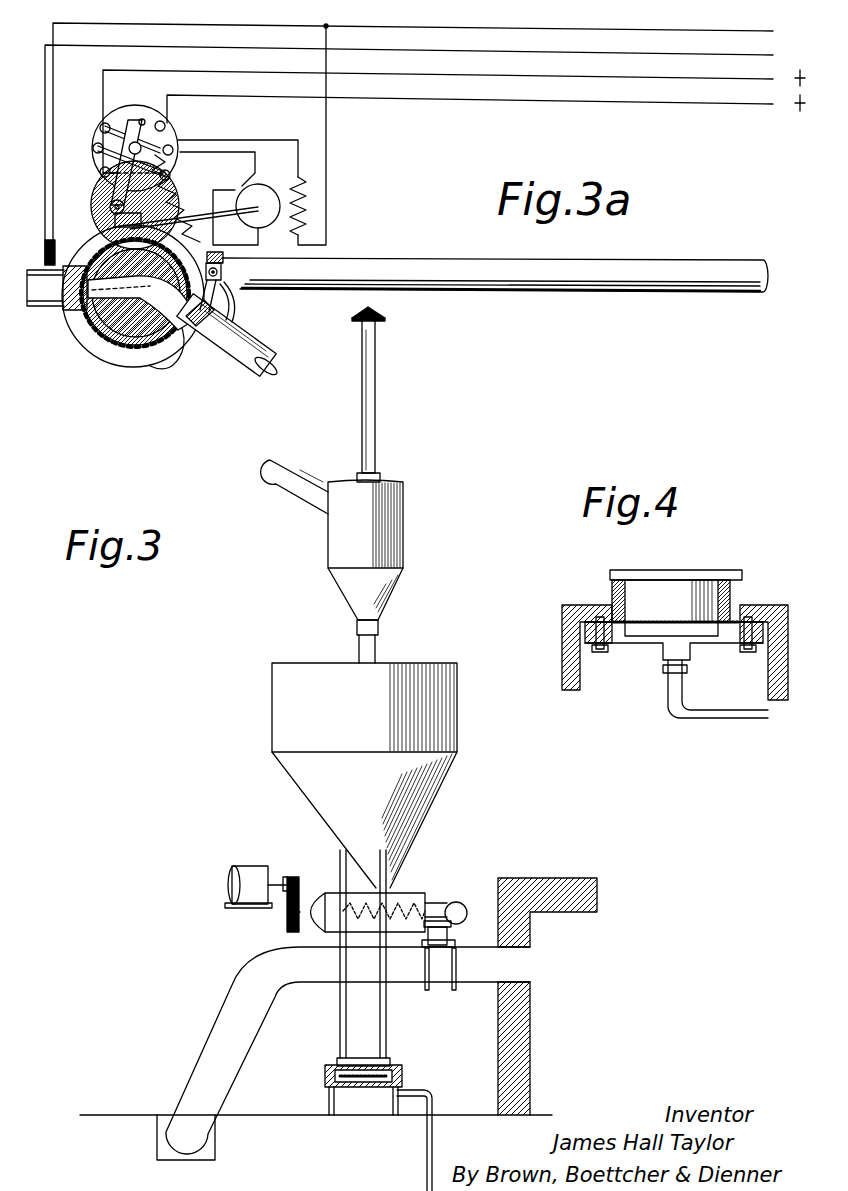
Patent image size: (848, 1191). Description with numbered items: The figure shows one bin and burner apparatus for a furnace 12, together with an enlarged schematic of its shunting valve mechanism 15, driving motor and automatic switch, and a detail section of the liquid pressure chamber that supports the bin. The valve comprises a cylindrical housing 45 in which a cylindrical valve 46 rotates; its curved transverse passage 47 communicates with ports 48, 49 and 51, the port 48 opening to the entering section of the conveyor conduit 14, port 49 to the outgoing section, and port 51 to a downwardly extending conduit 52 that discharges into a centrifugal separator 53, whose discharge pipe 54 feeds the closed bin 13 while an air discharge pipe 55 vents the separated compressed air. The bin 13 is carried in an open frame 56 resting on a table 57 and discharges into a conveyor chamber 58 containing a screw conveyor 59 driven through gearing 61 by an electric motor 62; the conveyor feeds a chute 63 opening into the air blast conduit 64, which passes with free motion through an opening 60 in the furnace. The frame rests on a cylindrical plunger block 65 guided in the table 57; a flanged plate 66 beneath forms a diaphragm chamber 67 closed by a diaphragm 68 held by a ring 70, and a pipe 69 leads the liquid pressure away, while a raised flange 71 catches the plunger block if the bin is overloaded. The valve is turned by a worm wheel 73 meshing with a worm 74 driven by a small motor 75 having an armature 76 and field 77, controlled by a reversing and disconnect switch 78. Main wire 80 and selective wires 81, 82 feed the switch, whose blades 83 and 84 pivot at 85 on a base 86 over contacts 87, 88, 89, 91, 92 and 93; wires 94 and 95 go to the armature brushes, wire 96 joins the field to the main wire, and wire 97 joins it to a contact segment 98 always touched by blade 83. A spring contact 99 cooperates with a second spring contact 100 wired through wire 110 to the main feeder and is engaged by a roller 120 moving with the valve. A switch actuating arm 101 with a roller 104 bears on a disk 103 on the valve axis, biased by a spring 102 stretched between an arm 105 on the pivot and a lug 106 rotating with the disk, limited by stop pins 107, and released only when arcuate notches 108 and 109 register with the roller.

In FIG. 3, the furnace 12 is at (567, 878).
In FIG. 3, the bin 13 is at (272, 705).
In FIG. 3, the conveyor conduit 14 is at (35, 306).
In FIG. 3A, the conveyor conduit 14 is at (283, 288).
In FIG. 3, the valve mechanism 15 is at (75, 362).
In FIG. 3, the cylindrical housing 45 is at (90, 322).
In FIG. 3, the cylindrical valve 46 is at (112, 355).
In FIG. 3, the curved transverse passage 47 is at (140, 345).
In FIG. 3, the valve port 48 is at (78, 300).
In FIG. 3, the valve port 49 is at (217, 292).
In FIG. 3, the valve port 51 is at (188, 366).
In FIG. 3, the downwardly extending conduit 52 is at (265, 462).
In FIG. 3, the centrifugal separator 53 is at (328, 545).
In FIG. 3, the discharge pipe 54 is at (360, 648).
In FIG. 3, the air discharge pipe 55 is at (372, 415).
In FIG. 3, the open frame 56 is at (340, 1000).
In FIG. 3, the table 57 is at (325, 1075).
In FIG. 4, the table 57 is at (562, 642).
In FIG. 3, the conveyor chamber 58 is at (385, 890).
In FIG. 3, the screw conveyor 59 is at (395, 910).
In FIG. 3, the opening 60 is at (498, 985).
In FIG. 3, the system of gearing 61 is at (290, 908).
In FIG. 3, the electric motor 62 is at (228, 885).
In FIG. 3, the feeding chute 63 is at (458, 922).
In FIG. 3, the air blast conduit 64 is at (408, 985).
In FIG. 3, the cylindrical plunger block 65 is at (340, 1058).
In FIG. 4, the cylindrical plunger block 65 is at (640, 582).
In FIG. 3, the flanged plate 66 is at (345, 1092).
In FIG. 4, the flanged plate 66 is at (640, 645).
In FIG. 3, the diaphragm chamber 67 is at (330, 1086).
In FIG. 4, the diaphragm chamber 67 is at (716, 638).
In FIG. 3, the diaphragm 68 is at (395, 1070).
In FIG. 4, the diaphragm 68 is at (722, 612).
In FIG. 3, the pipe 69 is at (427, 1140).
In FIG. 4, the pipe 69 is at (690, 714).
In FIG. 4, the ring 70 is at (627, 616).
In FIG. 3, the raised flange 71 is at (388, 1060).
In FIG. 4, the raised flange 71 is at (613, 584).
In FIG. 3, the worm wheel 73 is at (126, 350).
In FIG. 3, the driving worm 74 is at (112, 242).
In FIG. 3, the motor 75 is at (288, 166).
In FIG. 3, the armature 76 is at (262, 228).
In FIG. 3, the field 77 is at (308, 208).
In FIG. 3, the motor switch 78 is at (92, 130).
In FIG. 3, the main transmission wire 80 is at (518, 32).
In FIG. 3, the first selective wire 81 is at (578, 80).
In FIG. 3, the second selective wire 82 is at (603, 105).
In FIG. 3, the switch blade 83 is at (120, 132).
In FIG. 3, the switch blade 84 is at (138, 125).
In FIG. 3, the central pivot 85 is at (146, 122).
In FIG. 3, the base 86 is at (96, 150).
In FIG. 3, the contact 87 is at (100, 174).
In FIG. 3, the contact 88 is at (170, 176).
In FIG. 3, the contact 89 is at (103, 123).
In FIG. 3, the contact 91 is at (172, 138).
In FIG. 3, the contact 92 is at (548, 56).
In FIG. 3, the contact 93 is at (172, 152).
In FIG. 3, the wire 94 is at (210, 200).
In FIG. 3, the wire 95 is at (232, 153).
In FIG. 3, the wire 96 is at (326, 185).
In FIG. 3, the wire 97 is at (265, 141).
In FIG. 3, the contact segment 98 is at (165, 126).
In FIG. 3, the spring contact 99 is at (47, 258).
In FIG. 3, the spring contact 100 is at (47, 243).
In FIG. 3, the switch actuating arm 101 is at (114, 195).
In FIG. 3, the biasing spring 102 is at (205, 236).
In FIG. 3, the disk 103 is at (100, 352).
In FIG. 3, the roller 104 is at (110, 208).
In FIG. 3, the co-extensive arm 105 is at (162, 122).
In FIG. 3, the lug 106 is at (238, 326).
In FIG. 3, the stop pins 107 is at (136, 219).
In FIG. 3, the arcuate notch 108 is at (170, 214).
In FIG. 3, the arcuate notch 109 is at (162, 368).
In FIG. 3, the wire 110 is at (45, 190).
In FIG. 3, the engaging roller 120 is at (222, 270).